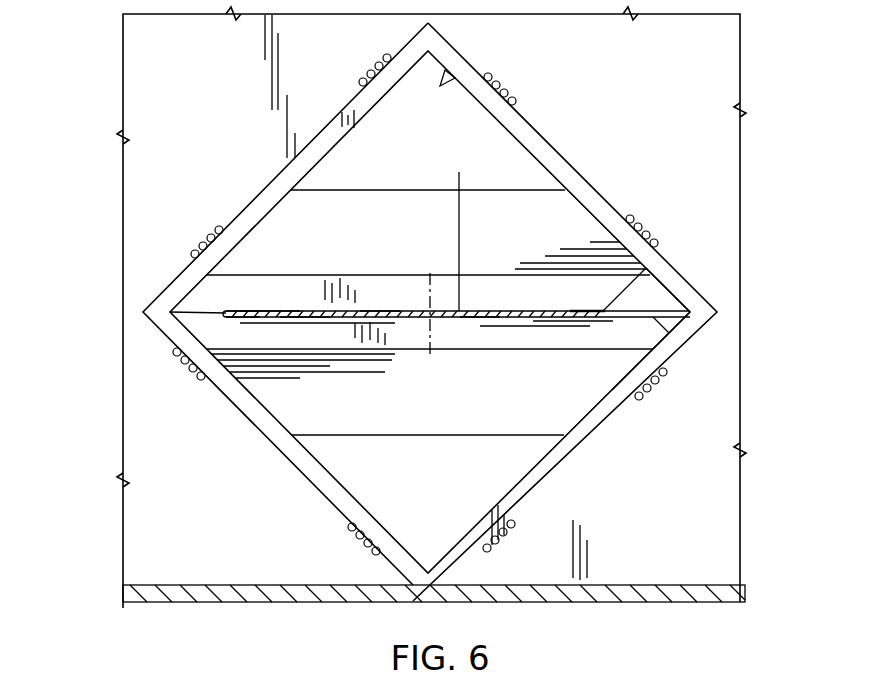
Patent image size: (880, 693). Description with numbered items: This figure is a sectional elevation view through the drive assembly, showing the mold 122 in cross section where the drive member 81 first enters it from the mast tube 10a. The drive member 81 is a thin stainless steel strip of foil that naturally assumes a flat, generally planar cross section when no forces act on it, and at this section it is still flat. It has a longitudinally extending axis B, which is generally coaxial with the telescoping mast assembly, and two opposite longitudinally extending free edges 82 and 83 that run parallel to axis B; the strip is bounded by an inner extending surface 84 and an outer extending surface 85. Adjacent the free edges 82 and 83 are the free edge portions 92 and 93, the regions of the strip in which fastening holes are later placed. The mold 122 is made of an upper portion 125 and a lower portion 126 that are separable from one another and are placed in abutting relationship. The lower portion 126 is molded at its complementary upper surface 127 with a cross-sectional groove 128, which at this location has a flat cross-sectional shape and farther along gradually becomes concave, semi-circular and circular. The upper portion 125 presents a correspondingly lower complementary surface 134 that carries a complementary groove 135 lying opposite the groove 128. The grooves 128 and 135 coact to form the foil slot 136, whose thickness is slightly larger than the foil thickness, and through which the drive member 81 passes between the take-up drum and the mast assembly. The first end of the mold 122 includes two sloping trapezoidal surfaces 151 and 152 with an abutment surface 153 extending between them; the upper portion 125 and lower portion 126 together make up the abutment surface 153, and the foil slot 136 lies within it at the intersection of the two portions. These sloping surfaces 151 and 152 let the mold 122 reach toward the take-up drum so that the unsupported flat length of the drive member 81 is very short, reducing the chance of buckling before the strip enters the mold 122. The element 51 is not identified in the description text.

The mast tube 10a is at (513, 112).
The inner wall 51 is at (450, 76).
The drive member 81 is at (382, 306).
The free edge 82 is at (228, 314).
The free edge 83 is at (642, 310).
The inner extending surface 84 is at (280, 313).
The outer extending surface 85 is at (290, 320).
The free edge portion 92 is at (240, 310).
The free edge portion 93 is at (603, 306).
The mold 122 is at (372, 438).
The upper portion 125 is at (563, 218).
The lower portion 126 is at (612, 385).
The upper surface 127 is at (655, 298).
The cross-sectional groove 128 is at (460, 229).
The complementary surface 134 is at (668, 334).
The complementary groove 135 is at (483, 318).
The foil slot 136 is at (320, 308).
The sloping trapezoidal surface 151 is at (305, 405).
The sloping trapezoidal surface 152 is at (350, 210).
The abutment surface 153 is at (195, 323).
The longitudinal axis B is at (428, 320).